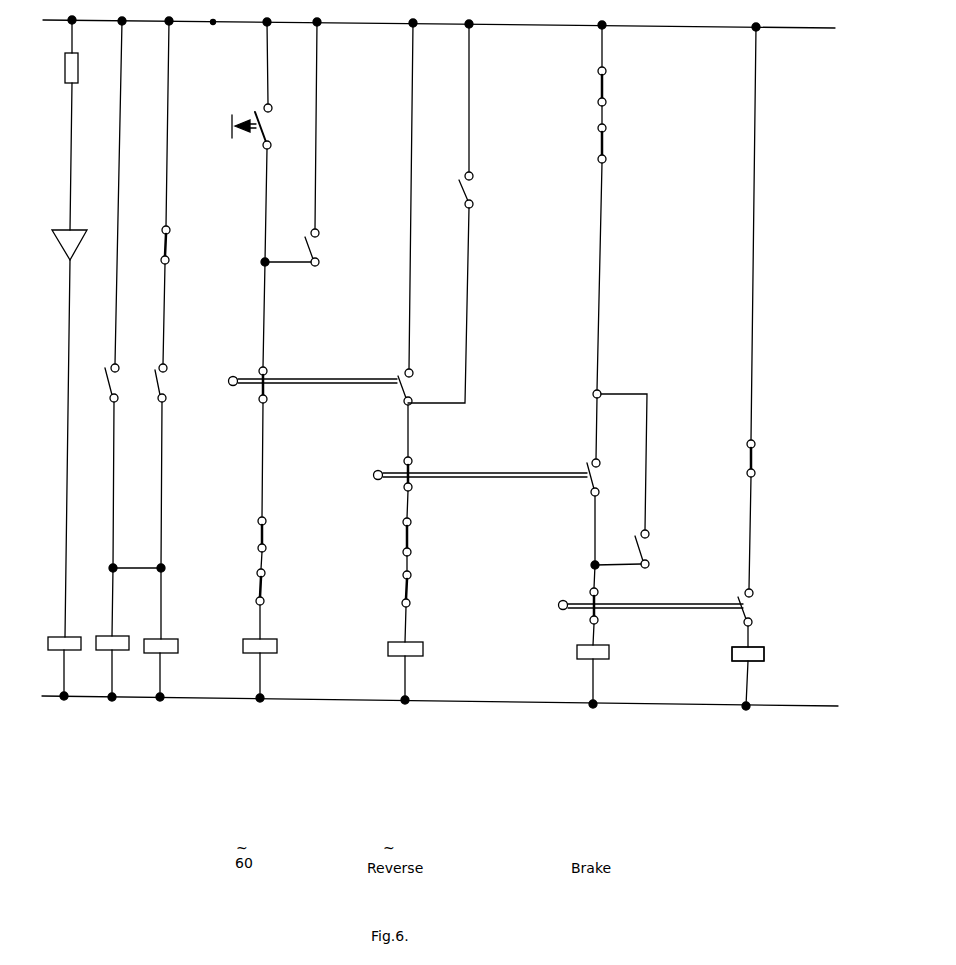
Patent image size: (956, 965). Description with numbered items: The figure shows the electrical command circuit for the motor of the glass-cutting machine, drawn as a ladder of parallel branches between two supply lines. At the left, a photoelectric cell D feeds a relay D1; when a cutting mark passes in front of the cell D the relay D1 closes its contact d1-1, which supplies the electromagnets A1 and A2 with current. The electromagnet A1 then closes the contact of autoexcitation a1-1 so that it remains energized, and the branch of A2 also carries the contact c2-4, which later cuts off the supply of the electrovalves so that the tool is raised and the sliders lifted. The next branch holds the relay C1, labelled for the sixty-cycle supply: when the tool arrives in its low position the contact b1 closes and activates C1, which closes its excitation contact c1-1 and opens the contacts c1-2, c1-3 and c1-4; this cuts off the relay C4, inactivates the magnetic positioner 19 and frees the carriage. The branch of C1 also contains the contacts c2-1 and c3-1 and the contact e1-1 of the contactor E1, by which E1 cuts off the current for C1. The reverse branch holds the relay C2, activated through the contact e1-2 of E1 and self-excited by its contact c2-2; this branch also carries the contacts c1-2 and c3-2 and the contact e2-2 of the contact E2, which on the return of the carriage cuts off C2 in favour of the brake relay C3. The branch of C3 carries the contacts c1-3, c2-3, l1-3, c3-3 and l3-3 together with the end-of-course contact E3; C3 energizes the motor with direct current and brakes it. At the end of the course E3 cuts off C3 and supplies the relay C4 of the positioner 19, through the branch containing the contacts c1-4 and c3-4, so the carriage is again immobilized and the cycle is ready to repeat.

The photoelectric cell D is at (60, 140).
The relay D1 is at (63, 504).
The electromagnet A1 is at (128, 385).
The electromagnet A2 is at (161, 387).
The relay C1 is at (260, 389).
The relay C2 is at (405, 393).
The relay C3 is at (593, 395).
The relay C4 is at (748, 397).
The contact d1-1 is at (96, 383).
The contact of autoexcitation a1-1 is at (145, 396).
The contact c2-4 is at (147, 251).
The contact b1 is at (239, 126).
The excitation contact c1-1 is at (312, 144).
The contact c2-2 is at (460, 213).
The contact c1-3 is at (608, 86).
The contact c2-3 is at (608, 134).
The contactor E1 is at (300, 385).
The contact e1-1 is at (286, 384).
The contact e1-2 is at (428, 386).
The contact E2 is at (468, 480).
The contact e2-2 is at (426, 473).
The contact l1-3 is at (605, 477).
The contact c1-4 is at (772, 458).
The contact c2-1 is at (245, 534).
The contact c3-1 is at (242, 578).
The contact c1-2 is at (391, 537).
The contact c3-2 is at (390, 581).
The contact c3-3 is at (640, 481).
The contact E3 is at (638, 611).
The contact l3-3 is at (610, 605).
The contact c3-4 is at (764, 607).
The magnetic positioner 19 is at (762, 759).